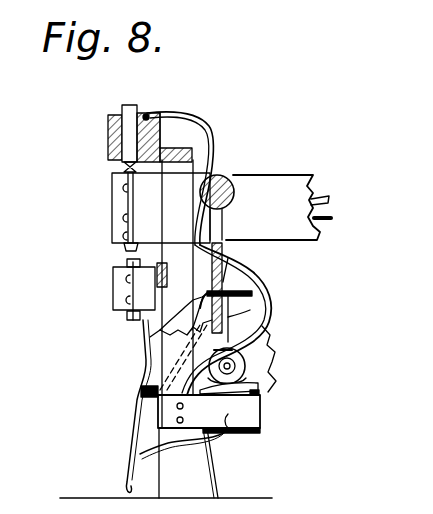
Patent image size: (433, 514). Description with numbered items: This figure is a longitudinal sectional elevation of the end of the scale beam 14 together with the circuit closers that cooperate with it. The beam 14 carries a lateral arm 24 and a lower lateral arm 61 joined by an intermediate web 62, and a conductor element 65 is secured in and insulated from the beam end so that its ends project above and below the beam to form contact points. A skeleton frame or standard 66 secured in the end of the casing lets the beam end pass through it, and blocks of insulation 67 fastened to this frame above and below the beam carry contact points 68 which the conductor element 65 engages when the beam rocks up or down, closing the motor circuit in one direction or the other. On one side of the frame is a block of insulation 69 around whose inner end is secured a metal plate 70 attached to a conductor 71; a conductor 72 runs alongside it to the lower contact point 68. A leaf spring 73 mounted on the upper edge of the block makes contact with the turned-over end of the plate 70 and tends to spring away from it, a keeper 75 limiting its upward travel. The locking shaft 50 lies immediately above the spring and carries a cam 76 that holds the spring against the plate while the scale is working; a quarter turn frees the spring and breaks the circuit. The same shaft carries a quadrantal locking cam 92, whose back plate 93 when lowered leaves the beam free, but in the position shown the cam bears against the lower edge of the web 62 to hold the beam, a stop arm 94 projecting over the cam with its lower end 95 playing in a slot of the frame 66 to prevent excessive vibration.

The frame bar 14 is at (272, 178).
The lateral arm 24 is at (219, 177).
The locking shaft 50 is at (158, 364).
The lower lateral arm 61 is at (212, 276).
The intermediate web 62 is at (222, 228).
The conductor element 65 is at (130, 248).
The frame or standard 66 is at (200, 126).
The block of insulation 67 is at (157, 114).
The contact point 68 is at (130, 138).
The block of insulation 69 is at (228, 426).
The metal plate 70 is at (262, 412).
The conductor 71 is at (177, 446).
The conductor 72 is at (137, 432).
The leaf spring 73 is at (257, 385).
The keeper 75 is at (241, 360).
The cam 76 is at (222, 352).
The locking cam 92 is at (262, 270).
The back plate 93 is at (270, 310).
The stop arm 94 is at (252, 258).
The lower end of stop arm 95 is at (150, 394).